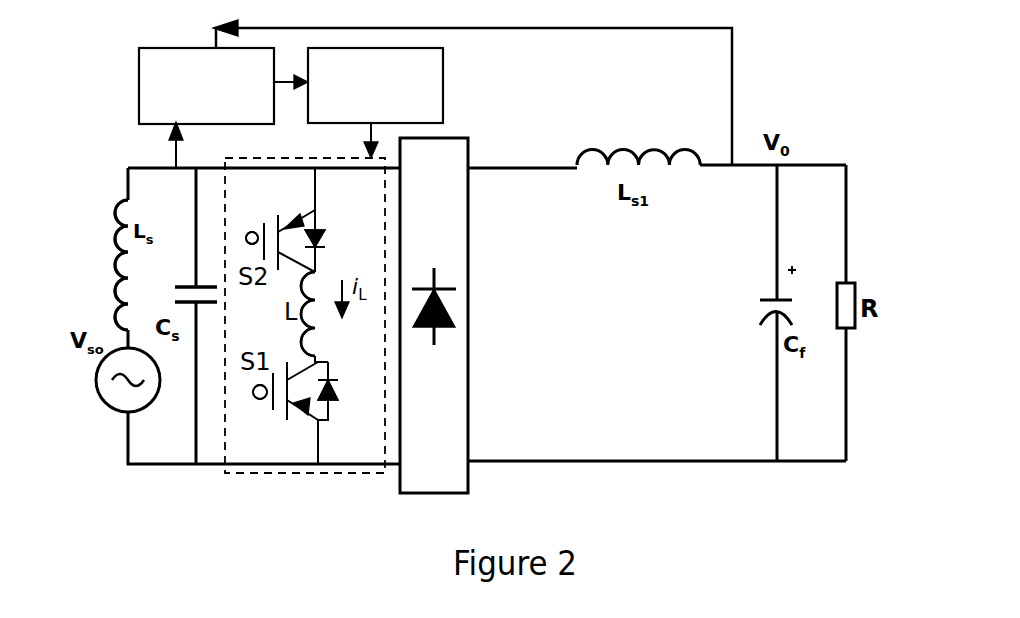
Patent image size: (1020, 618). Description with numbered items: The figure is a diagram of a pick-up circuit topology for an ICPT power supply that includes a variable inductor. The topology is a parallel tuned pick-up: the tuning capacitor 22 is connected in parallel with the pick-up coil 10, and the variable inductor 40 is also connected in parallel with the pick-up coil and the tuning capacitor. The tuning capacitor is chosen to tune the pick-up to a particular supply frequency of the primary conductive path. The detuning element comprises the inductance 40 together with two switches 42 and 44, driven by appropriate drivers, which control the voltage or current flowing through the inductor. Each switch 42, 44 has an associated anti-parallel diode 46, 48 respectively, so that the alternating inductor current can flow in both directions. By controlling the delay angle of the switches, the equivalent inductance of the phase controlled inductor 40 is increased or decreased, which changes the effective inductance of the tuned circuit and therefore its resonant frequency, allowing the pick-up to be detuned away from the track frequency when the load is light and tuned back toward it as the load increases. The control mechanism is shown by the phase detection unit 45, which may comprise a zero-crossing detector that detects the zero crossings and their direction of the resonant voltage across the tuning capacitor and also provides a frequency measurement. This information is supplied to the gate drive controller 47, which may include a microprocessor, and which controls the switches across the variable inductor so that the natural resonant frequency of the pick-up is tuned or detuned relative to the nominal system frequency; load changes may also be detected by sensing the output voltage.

The pick-up coil 10 is at (110, 247).
The tuning capacitor 22 is at (193, 287).
The variable inductor 40 is at (331, 328).
The switch 42 is at (258, 399).
The switch 44 is at (255, 232).
The phase detection unit 45 is at (139, 82).
The anti-parallel diode 46 is at (320, 421).
The gate drive controller 47 is at (443, 82).
The anti-parallel diode 48 is at (320, 220).